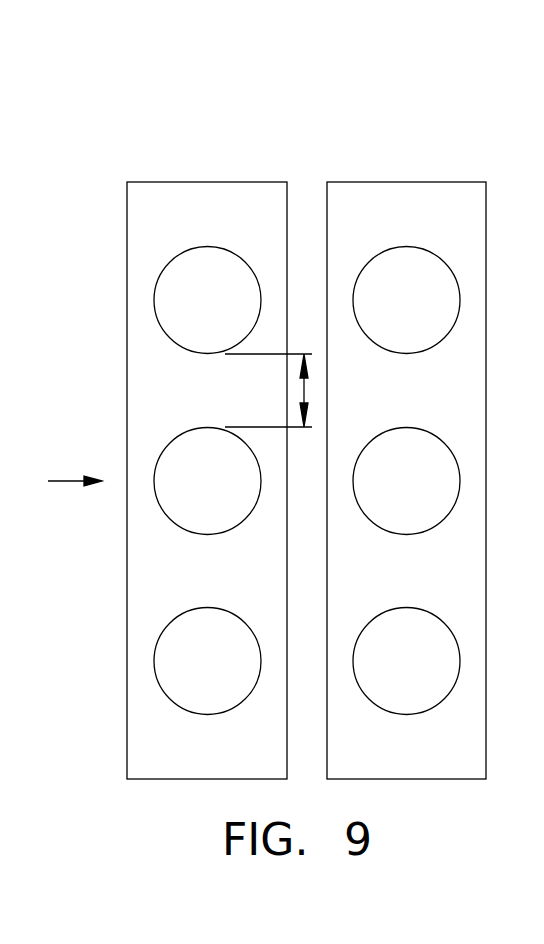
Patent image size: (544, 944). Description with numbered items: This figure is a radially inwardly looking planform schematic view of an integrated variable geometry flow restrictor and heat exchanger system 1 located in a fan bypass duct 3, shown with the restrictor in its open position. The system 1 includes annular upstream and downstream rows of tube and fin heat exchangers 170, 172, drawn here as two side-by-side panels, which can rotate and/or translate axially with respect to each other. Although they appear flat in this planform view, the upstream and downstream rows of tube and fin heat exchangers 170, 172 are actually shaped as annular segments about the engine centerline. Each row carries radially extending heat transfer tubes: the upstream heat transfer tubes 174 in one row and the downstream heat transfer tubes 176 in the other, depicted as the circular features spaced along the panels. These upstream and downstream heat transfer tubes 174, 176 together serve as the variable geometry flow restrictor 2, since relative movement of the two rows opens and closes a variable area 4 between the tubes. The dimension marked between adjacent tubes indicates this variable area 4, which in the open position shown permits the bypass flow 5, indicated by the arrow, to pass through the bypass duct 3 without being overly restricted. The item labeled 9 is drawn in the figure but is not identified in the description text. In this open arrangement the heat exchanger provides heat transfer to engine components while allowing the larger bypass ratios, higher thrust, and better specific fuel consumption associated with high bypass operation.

The integrated variable geometry flow restrictor and heat exchanger system 1 is at (342, 142).
The variable geometry flow restrictor 2 is at (345, 182).
The fan bypass duct 3 is at (78, 601).
The variable area 4 is at (305, 391).
The bypass flow 5 is at (62, 481).
The aperture 9 is at (227, 530).
The upstream row of tube and fin heat exchangers 170 is at (203, 182).
The downstream row of tube and fin heat exchangers 172 is at (407, 182).
The upstream heat transfer tubes 174 is at (403, 247).
The downstream heat transfer tubes 176 is at (205, 247).